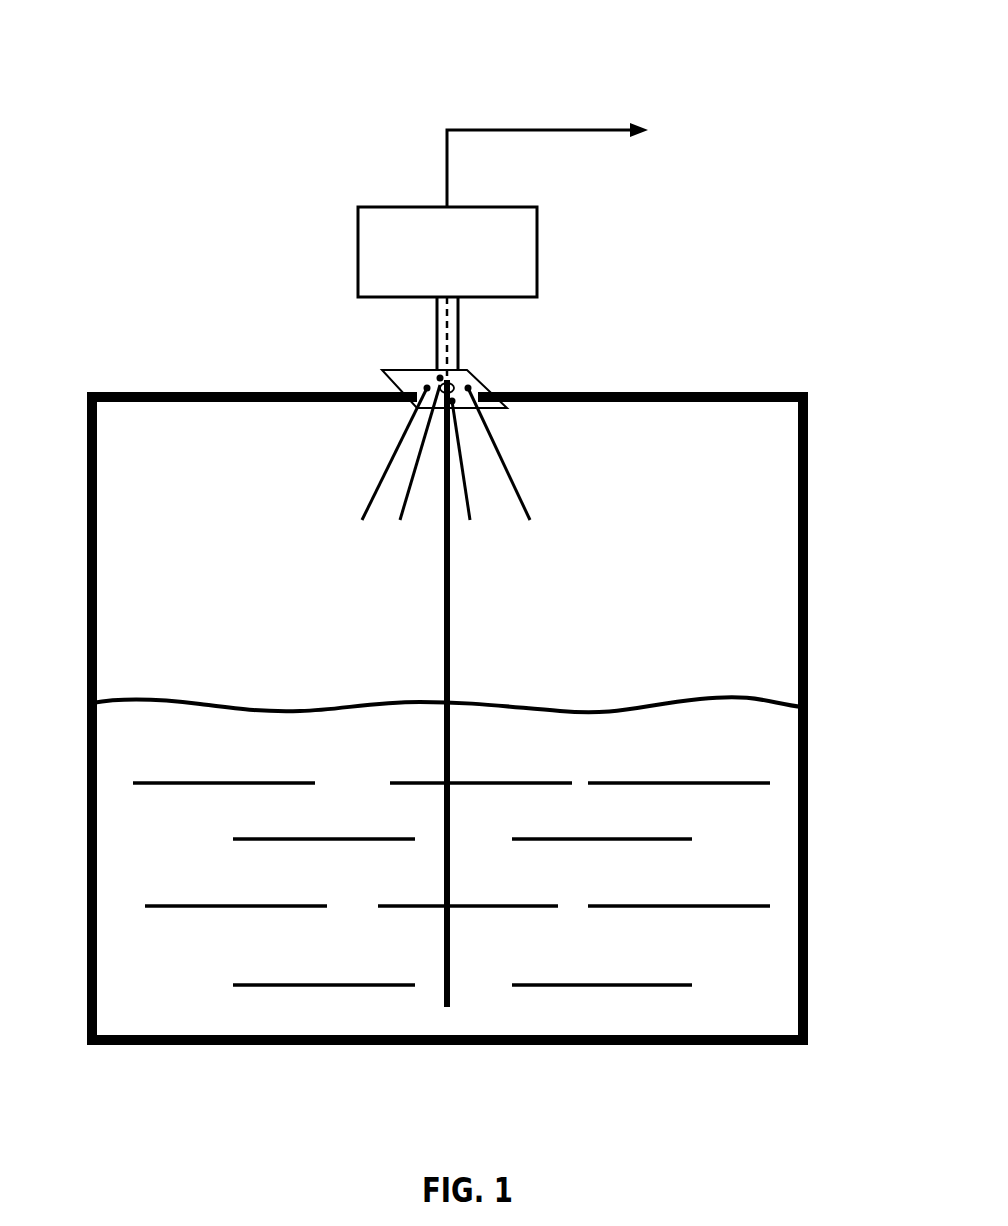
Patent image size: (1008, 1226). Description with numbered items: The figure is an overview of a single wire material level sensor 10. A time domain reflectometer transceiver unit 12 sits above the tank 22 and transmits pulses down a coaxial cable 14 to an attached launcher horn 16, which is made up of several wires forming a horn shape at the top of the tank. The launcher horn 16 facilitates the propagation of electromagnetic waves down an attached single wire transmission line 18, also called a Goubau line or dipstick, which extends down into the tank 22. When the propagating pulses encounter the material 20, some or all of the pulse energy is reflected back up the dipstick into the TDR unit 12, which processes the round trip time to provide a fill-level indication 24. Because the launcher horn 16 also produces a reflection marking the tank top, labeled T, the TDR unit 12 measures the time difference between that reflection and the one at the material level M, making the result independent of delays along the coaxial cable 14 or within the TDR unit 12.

The single wire material level sensor 10 is at (172, 208).
The time domain reflectometer (TDR) transceiver unit 12 is at (537, 237).
The coaxial cable 14 is at (458, 332).
The launcher horn 16 is at (513, 475).
The single wire transmission line 18 is at (450, 585).
The material 20 is at (221, 698).
The tank 22 is at (808, 575).
The fill-level indication 24 is at (513, 130).